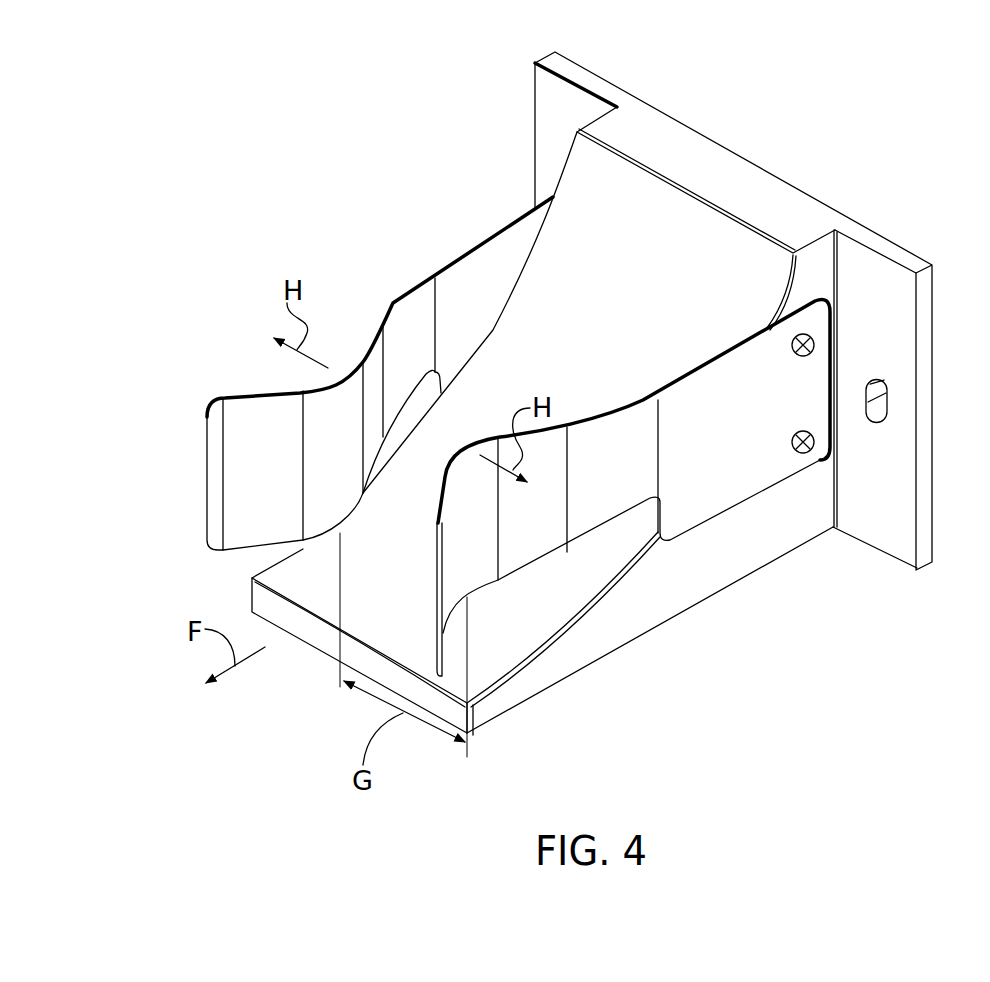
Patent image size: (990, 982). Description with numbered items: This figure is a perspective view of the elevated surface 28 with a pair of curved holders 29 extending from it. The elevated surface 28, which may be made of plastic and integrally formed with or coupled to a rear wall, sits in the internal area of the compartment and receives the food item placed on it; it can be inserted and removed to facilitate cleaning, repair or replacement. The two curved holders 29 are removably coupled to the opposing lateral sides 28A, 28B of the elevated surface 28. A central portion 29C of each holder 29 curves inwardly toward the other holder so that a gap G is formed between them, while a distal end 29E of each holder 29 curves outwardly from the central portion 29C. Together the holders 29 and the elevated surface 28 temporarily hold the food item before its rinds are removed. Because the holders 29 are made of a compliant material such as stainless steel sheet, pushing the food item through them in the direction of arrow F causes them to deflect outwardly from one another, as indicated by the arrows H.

The elevated surface 28 is at (693, 230).
The lateral side of the elevated surface 28A is at (770, 523).
The lateral side of the elevated surface 28B is at (567, 157).
The curved holder 29 is at (277, 404).
The central portion of the holder 29C is at (356, 351).
The distal end of the holder 29E is at (199, 460).